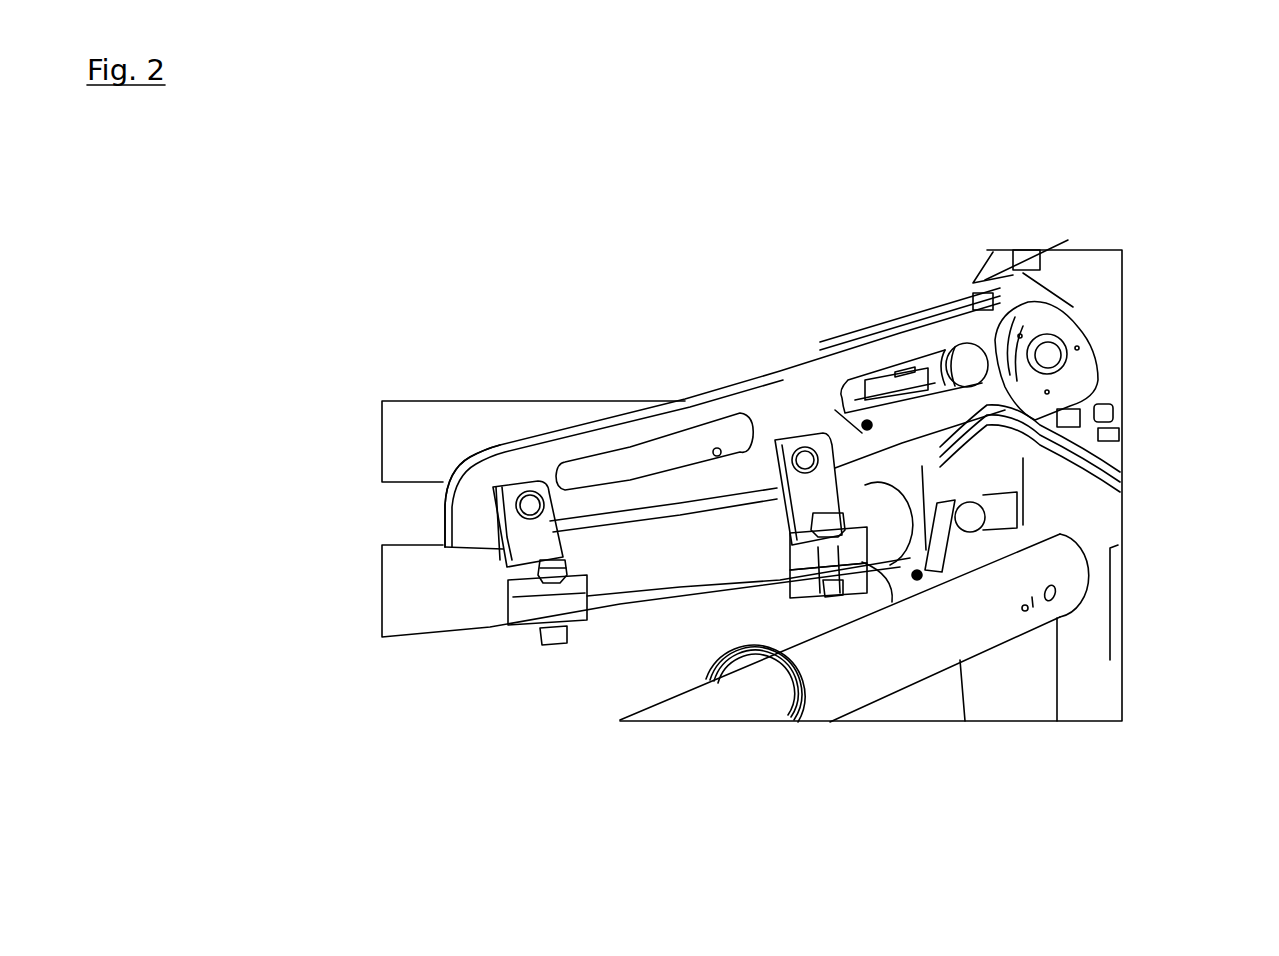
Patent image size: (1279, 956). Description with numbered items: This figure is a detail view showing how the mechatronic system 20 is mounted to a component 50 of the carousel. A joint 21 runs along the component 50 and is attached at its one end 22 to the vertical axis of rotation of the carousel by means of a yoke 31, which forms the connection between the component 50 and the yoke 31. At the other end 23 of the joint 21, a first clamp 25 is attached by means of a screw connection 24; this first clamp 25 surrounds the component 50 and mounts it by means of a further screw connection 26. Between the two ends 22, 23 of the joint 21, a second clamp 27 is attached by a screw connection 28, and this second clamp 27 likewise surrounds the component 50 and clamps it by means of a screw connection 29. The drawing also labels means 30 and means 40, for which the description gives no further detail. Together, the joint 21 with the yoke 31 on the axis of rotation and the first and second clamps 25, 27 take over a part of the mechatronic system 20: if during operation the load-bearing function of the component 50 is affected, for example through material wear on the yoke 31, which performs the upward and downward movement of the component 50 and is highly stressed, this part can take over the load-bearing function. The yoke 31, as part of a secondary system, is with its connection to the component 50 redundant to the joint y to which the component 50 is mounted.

The mechatronic system 20 is at (741, 350).
The joint 21 is at (725, 361).
The end 22 is at (1040, 328).
The end 23 is at (547, 373).
The screw connection 24 is at (603, 352).
The clamp 25 is at (513, 600).
The screw connection 26 is at (514, 703).
The clamp 27 is at (806, 545).
The screw connection 28 is at (922, 317).
The screw connection 29 is at (822, 500).
The means 30 is at (1122, 326).
The yoke 31 is at (1094, 410).
The means 40 is at (507, 483).
The component 50 is at (688, 565).
The joint y is at (1091, 537).